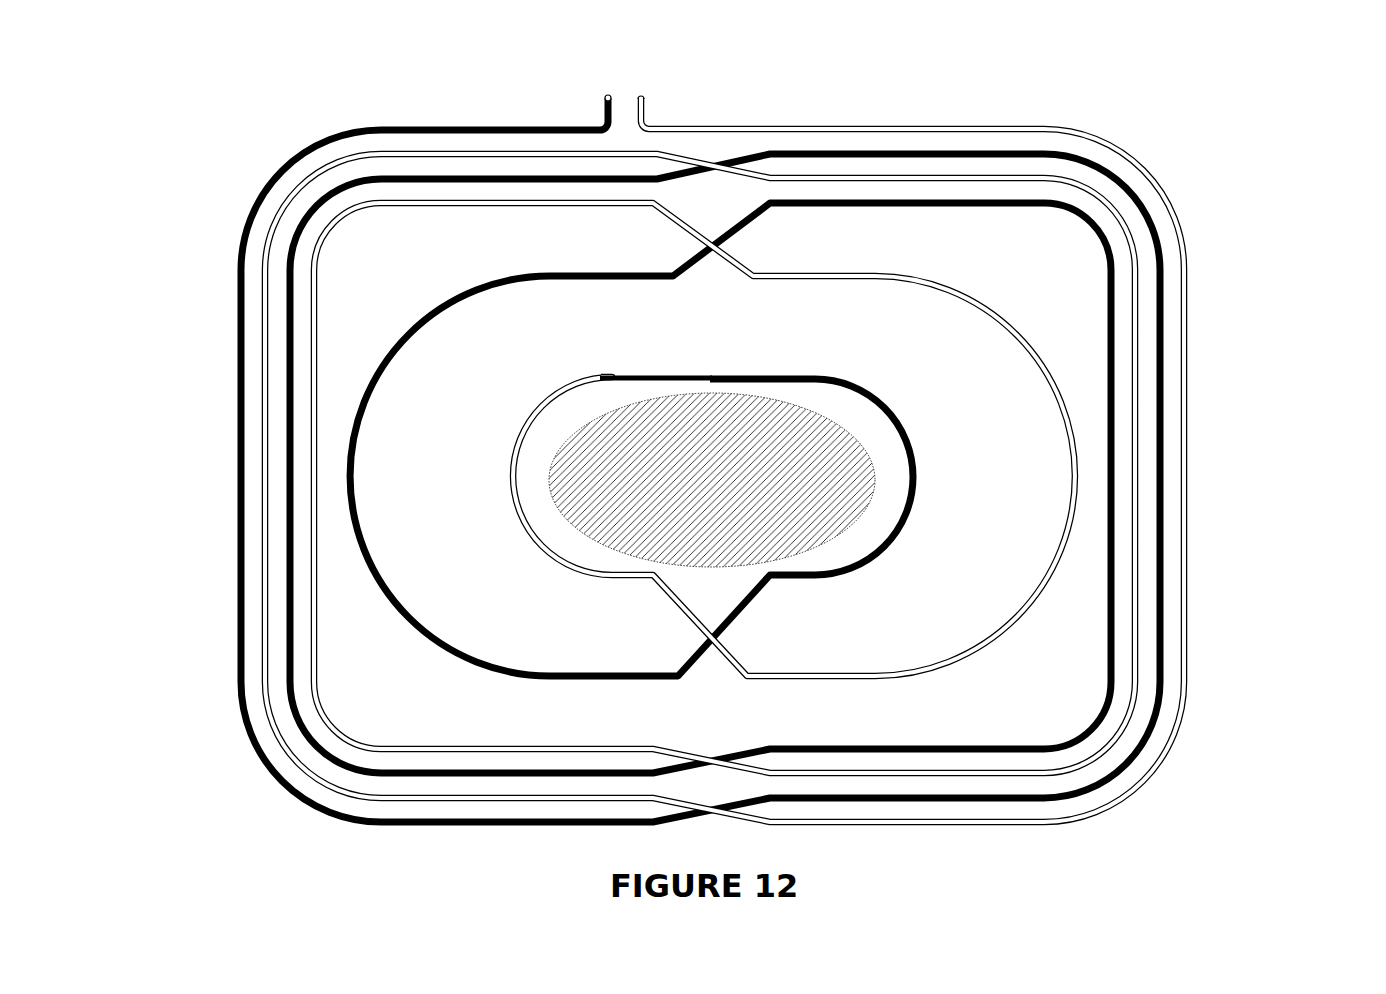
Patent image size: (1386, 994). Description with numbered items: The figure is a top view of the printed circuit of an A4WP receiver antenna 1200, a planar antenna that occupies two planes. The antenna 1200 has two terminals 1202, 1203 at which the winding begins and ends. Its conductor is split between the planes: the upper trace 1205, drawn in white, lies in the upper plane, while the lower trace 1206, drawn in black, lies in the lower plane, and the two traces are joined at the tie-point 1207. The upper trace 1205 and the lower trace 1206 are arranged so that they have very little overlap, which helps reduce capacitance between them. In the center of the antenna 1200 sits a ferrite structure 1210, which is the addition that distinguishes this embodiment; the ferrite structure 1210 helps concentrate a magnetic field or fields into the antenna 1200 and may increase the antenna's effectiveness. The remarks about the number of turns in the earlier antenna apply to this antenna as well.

The A4WP receiver antenna 1200 is at (700, 436).
The terminal 1202 is at (571, 99).
The terminal 1203 is at (675, 97).
The upper trace 1205 is at (1210, 239).
The lower trace 1206 is at (1188, 399).
The tie-point 1207 is at (698, 351).
The ferrite structure 1210 is at (901, 481).